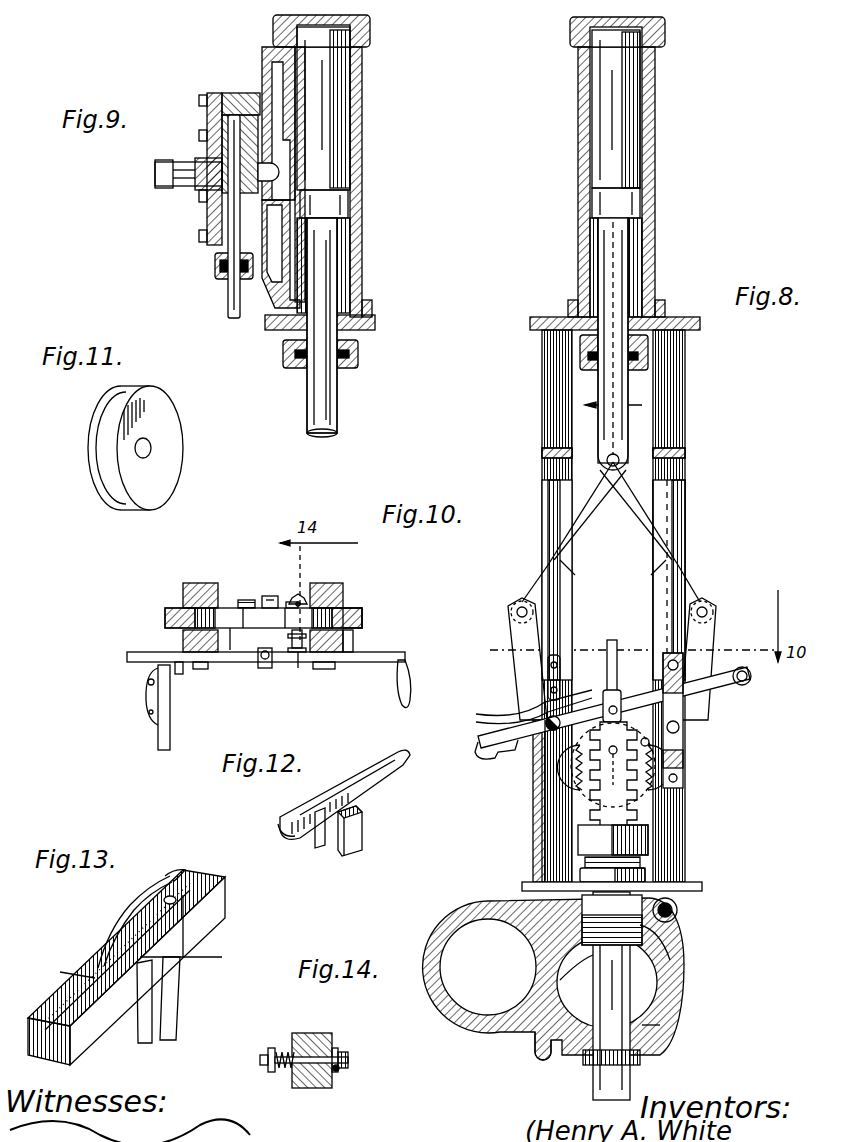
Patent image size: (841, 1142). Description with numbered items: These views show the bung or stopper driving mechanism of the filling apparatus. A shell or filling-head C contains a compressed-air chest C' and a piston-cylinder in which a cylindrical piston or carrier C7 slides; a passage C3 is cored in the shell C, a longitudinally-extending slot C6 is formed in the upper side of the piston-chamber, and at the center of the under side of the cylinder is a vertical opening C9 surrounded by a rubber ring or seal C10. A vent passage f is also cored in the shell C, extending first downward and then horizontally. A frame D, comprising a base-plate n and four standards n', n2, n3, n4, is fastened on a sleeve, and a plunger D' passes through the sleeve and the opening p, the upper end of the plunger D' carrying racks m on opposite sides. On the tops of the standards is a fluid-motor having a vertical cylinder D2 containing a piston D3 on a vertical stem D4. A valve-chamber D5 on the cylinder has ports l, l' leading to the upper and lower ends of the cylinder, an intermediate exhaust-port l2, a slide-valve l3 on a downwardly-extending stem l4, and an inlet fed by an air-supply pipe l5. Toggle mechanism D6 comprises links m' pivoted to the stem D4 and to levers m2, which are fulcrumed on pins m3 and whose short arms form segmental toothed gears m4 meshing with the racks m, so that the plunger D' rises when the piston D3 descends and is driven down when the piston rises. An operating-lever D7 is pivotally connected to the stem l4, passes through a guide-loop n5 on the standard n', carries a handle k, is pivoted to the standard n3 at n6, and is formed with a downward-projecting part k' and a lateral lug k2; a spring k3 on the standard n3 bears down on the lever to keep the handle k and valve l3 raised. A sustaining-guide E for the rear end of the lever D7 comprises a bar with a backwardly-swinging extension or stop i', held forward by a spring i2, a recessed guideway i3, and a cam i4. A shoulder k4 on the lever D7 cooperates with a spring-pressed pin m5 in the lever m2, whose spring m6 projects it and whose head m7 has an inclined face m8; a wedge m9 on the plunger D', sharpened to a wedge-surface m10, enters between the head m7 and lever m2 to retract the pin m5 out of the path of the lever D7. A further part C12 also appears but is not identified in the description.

In FIG. 9, the piston D3 is at (352, 118).
In FIG. 8, the piston D3 is at (625, 103).
In FIG. 9, the vertical cylinder D2 is at (350, 178).
In FIG. 8, the vertical cylinder D2 is at (640, 181).
In FIG. 9, the vertical stem D4 is at (322, 408).
In FIG. 8, the vertical stem D4 is at (620, 440).
In FIG. 9, the valve-chamber D5 is at (207, 232).
In FIG. 8, the toggle mechanism D6 is at (578, 560).
In FIG. 10, the operating-lever D7 is at (370, 655).
In FIG. 12, the operating-lever D7 is at (380, 760).
In FIG. 8, the operating-lever D7 is at (730, 690).
In FIG. 8, the frame D is at (682, 580).
In FIG. 8, the plunger D' is at (605, 996).
In FIG. 9, the port l is at (267, 123).
In FIG. 9, the port l' is at (264, 276).
In FIG. 9, the exhaust-port l2 is at (296, 168).
In FIG. 9, the slide-valve l3 is at (222, 140).
In FIG. 9, the stem l4 is at (228, 305).
In FIG. 10, the stem l4 is at (265, 670).
In FIG. 8, the stem l4 is at (607, 676).
In FIG. 9, the air-supply pipe l5 is at (185, 173).
In FIG. 8, the racks m is at (612, 776).
In FIG. 10, the links m' is at (236, 639).
In FIG. 8, the links m' is at (613, 579).
In FIG. 10, the levers m2 is at (396, 592).
In FIG. 14, the levers m2 is at (320, 1082).
In FIG. 8, the levers m2 is at (708, 650).
In FIG. 8, the pins m3 is at (683, 733).
In FIG. 10, the segmental toothed gears m4 is at (222, 612).
In FIG. 8, the segmental toothed gears m4 is at (580, 760).
In FIG. 10, the pin m5 is at (292, 638).
In FIG. 14, the pin m5 is at (336, 1052).
In FIG. 8, the pin m5 is at (644, 730).
In FIG. 14, the spring m6 is at (286, 1052).
In FIG. 10, the head m7 is at (278, 590).
In FIG. 14, the head m7 is at (348, 1058).
In FIG. 14, the inclined face m8 is at (340, 1072).
In FIG. 11, the wedge m9 is at (165, 455).
In FIG. 10, the wedge m9 is at (300, 595).
In FIG. 8, the wedge m9 is at (640, 770).
In FIG. 11, the wedge-surface m10 is at (100, 512).
In FIG. 8, the base-plate n is at (598, 877).
In FIG. 10, the standard n' is at (358, 641).
In FIG. 8, the standard n' is at (696, 580).
In FIG. 10, the standard n2 is at (340, 590).
In FIG. 8, the standard n2 is at (690, 402).
In FIG. 10, the standard n3 is at (183, 638).
In FIG. 8, the standard n3 is at (545, 796).
In FIG. 10, the standard n4 is at (190, 590).
In FIG. 8, the standard n4 is at (596, 599).
In FIG. 8, the guide-loop n5 is at (683, 752).
In FIG. 8, the pivot n6 is at (530, 707).
In FIG. 10, the handle k is at (416, 684).
In FIG. 8, the handle k is at (747, 681).
In FIG. 12, the downward-projecting part k' is at (322, 841).
In FIG. 10, the lug k2 is at (181, 674).
In FIG. 12, the lug k2 is at (363, 834).
In FIG. 8, the spring k3 is at (490, 744).
In FIG. 10, the shoulder k4 is at (298, 670).
In FIG. 10, the sustaining-guide E is at (145, 700).
In FIG. 13, the sustaining-guide E is at (126, 967).
In FIG. 8, the sustaining-guide E is at (520, 760).
In FIG. 13, the extension or stop i' is at (144, 905).
In FIG. 13, the spring i2 is at (150, 892).
In FIG. 13, the guideway i3 is at (222, 957).
In FIG. 13, the cam i4 is at (185, 900).
In FIG. 8, the shell or filling-head C is at (553, 961).
In FIG. 8, the compressed-air chest C' is at (488, 967).
In FIG. 8, the passage C3 is at (680, 915).
In FIG. 8, the slot C6 is at (675, 908).
In FIG. 8, the cylindrical piston or carrier C7 is at (660, 975).
In FIG. 8, the vertical opening C9 is at (660, 1028).
In FIG. 8, the ring or seal C10 is at (642, 1060).
In FIG. 8, the wall C12 is at (678, 950).
In FIG. 8, the opening p is at (540, 985).
In FIG. 8, the passage f is at (540, 1050).